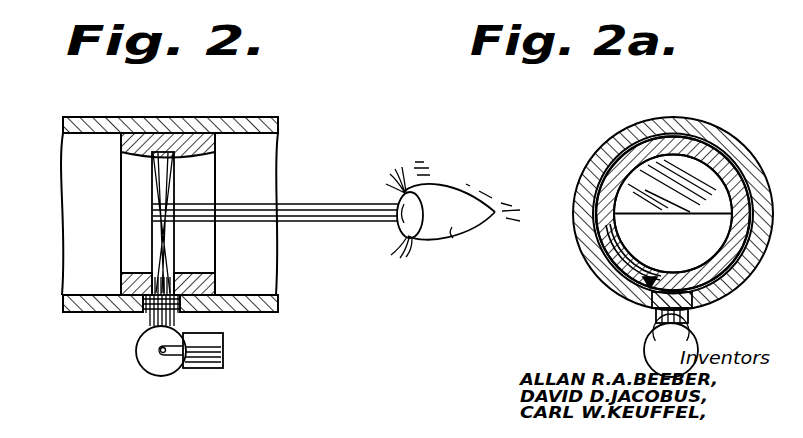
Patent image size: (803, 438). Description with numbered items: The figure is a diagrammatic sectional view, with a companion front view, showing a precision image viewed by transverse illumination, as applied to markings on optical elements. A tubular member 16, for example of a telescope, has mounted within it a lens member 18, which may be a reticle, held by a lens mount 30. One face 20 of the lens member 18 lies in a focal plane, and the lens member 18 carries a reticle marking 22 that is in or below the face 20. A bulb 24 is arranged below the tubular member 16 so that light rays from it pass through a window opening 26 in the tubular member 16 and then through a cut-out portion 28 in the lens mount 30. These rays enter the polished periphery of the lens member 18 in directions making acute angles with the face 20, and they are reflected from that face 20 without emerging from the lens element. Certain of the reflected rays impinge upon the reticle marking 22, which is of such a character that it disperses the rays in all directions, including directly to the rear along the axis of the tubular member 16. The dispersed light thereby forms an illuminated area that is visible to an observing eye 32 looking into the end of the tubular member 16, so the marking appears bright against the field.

In FIG. 2, the tubular member 16 is at (243, 117).
In FIG. 2a, the tubular member 16 is at (690, 121).
In FIG. 2, the lens member 18 is at (163, 166).
In FIG. 2a, the lens member 18 is at (689, 172).
In FIG. 2, the face 20 is at (151, 182).
In FIG. 2, the reticle marking 22 is at (153, 213).
In FIG. 2a, the reticle marking 22 is at (675, 214).
In FIG. 2, the bulb 24 is at (165, 370).
In FIG. 2a, the bulb 24 is at (645, 347).
In FIG. 2, the window opening 26 is at (147, 316).
In FIG. 2, the cut-out portion 28 is at (217, 278).
In FIG. 2a, the cut-out portion 28 is at (650, 303).
In FIG. 2, the lens mount 30 is at (157, 276).
In FIG. 2a, the lens mount 30 is at (612, 257).
In FIG. 2, the observing eye 32 is at (452, 232).